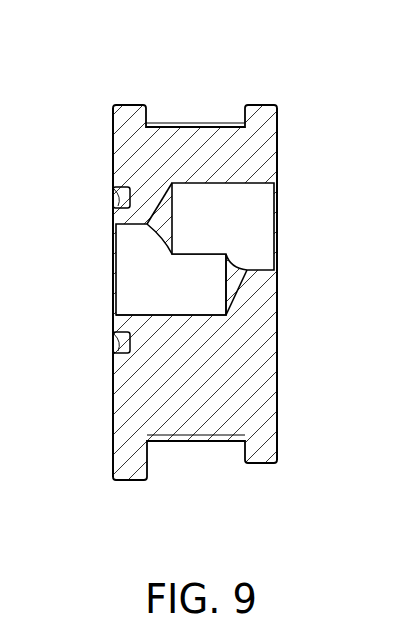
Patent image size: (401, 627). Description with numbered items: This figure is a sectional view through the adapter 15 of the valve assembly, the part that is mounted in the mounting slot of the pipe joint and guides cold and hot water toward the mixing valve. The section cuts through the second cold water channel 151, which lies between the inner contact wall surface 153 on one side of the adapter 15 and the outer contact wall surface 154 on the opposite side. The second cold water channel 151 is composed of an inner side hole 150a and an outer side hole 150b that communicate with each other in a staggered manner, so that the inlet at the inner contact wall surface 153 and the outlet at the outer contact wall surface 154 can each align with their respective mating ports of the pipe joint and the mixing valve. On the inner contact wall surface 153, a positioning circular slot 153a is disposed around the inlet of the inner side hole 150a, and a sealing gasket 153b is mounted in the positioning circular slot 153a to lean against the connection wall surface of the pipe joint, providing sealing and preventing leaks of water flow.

The adapter 15 is at (195, 285).
The inner side hole 150a is at (190, 300).
The outer side hole 150b is at (257, 222).
The second cold water channel 151 is at (130, 272).
The inner contact wall surface 153 is at (113, 138).
The positioning circular slot 153a is at (120, 344).
The sealing gasket 153b is at (122, 197).
The outer contact wall surface 154 is at (277, 145).